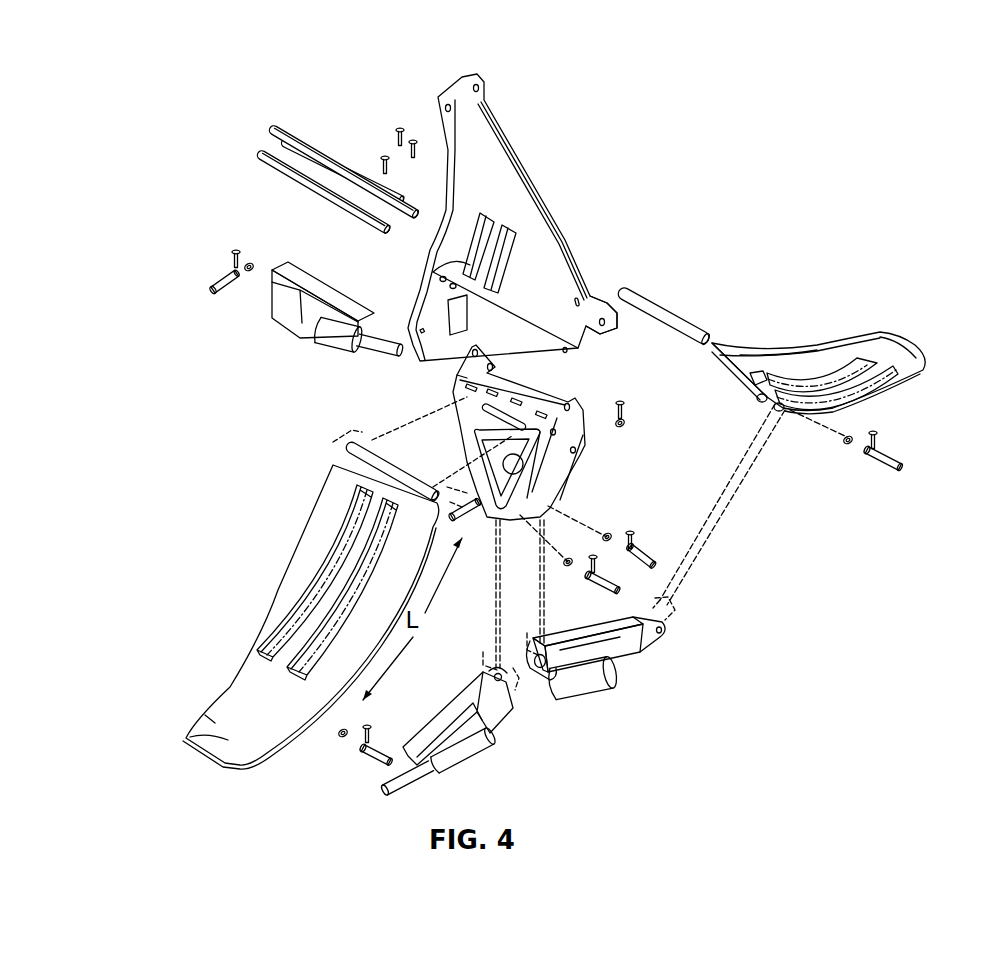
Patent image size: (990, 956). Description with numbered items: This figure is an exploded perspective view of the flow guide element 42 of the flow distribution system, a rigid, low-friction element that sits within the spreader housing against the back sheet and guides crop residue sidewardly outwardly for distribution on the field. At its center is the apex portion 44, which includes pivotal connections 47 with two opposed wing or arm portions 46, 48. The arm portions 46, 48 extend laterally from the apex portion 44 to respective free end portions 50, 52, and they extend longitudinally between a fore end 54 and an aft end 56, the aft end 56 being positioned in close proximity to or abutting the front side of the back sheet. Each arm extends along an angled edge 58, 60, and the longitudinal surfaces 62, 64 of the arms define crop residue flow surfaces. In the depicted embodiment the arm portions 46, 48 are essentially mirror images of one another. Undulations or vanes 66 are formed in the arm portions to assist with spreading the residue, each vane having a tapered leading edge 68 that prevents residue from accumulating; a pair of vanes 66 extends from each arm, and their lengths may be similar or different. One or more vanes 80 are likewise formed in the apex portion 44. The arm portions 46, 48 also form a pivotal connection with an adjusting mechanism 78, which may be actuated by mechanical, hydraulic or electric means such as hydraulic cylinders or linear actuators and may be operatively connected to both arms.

The flow guide element 42 is at (640, 142).
The apex portion 44 is at (508, 148).
The wing or arm portion 46 is at (913, 380).
The pivotal connection 47 is at (617, 282).
The wing or arm portion 48 is at (257, 765).
The free end portion 50 is at (898, 346).
The free end portion 52 is at (185, 738).
The fore end 54 is at (580, 340).
The aft end 56 is at (445, 231).
The angled edge 58 is at (818, 347).
The angled edge 60 is at (273, 610).
The longitudinal surface 62 is at (850, 347).
The longitudinal surface 64 is at (217, 710).
The vanes 66 is at (788, 390).
The tapered leading edge 68 is at (758, 372).
The adjusting mechanism 78 is at (492, 735).
The vanes 80 is at (433, 272).